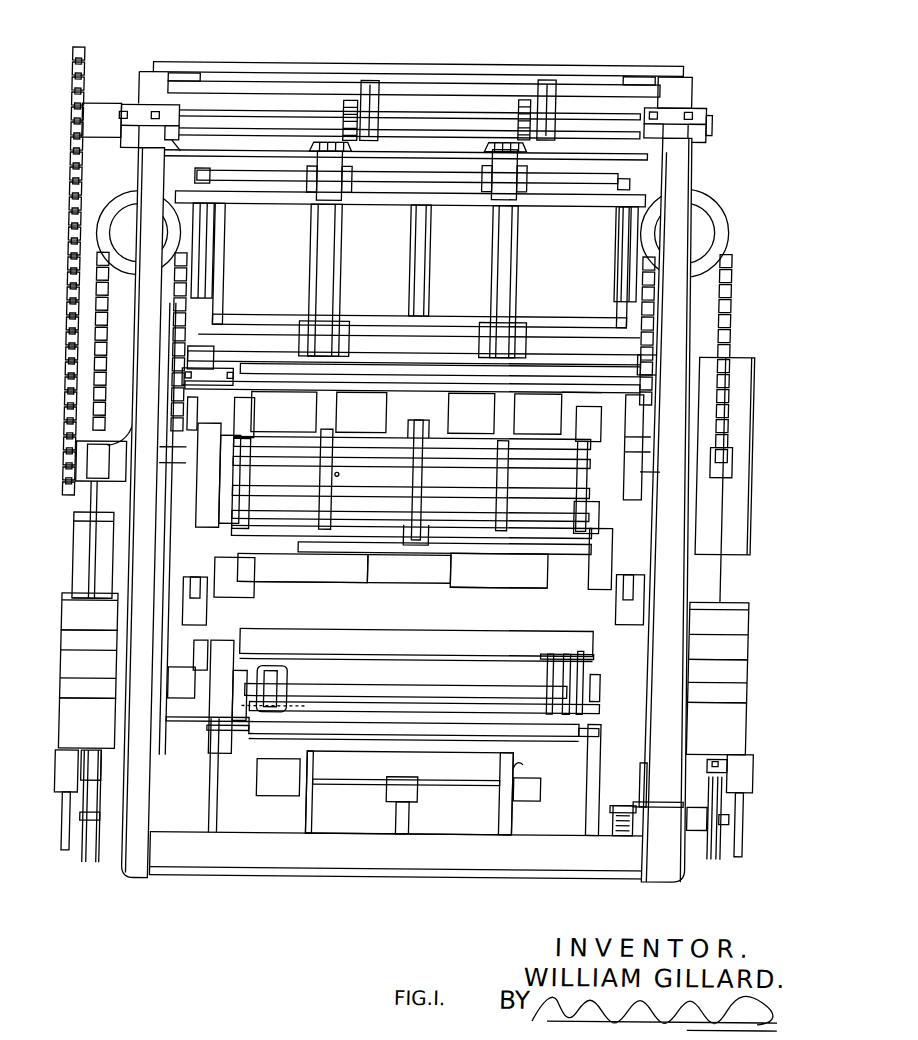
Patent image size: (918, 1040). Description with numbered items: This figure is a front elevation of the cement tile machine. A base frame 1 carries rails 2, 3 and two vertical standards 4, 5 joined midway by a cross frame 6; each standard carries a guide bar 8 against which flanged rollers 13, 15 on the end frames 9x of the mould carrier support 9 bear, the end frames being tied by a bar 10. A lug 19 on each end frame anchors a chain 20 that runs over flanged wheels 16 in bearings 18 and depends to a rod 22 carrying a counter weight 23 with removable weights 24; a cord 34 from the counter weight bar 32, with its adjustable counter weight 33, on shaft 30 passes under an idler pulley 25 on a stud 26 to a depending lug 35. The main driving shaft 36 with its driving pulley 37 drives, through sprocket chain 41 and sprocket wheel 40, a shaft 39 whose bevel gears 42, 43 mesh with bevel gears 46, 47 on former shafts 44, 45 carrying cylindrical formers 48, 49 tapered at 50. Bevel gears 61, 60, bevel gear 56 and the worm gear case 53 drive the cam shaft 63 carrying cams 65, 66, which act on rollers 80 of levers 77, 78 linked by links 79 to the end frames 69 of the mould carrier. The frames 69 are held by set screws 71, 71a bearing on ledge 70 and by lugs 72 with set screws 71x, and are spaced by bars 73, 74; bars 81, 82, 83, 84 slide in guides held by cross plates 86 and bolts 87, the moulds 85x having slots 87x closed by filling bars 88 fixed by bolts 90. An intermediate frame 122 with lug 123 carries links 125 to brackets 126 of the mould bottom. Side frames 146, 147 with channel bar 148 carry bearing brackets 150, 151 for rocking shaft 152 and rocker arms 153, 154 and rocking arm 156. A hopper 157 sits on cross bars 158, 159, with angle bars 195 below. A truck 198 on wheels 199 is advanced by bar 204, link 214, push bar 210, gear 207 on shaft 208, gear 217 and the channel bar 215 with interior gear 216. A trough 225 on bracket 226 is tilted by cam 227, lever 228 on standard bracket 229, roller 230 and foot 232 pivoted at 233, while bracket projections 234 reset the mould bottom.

The base frame 1 is at (179, 867).
The rail 2 is at (309, 836).
The rail 3 is at (509, 832).
The vertical standard 4 is at (140, 878).
The vertical standard 5 is at (678, 880).
The cross frame 6 is at (224, 307).
The guide bar 8 is at (163, 724).
The mould carrier support 9 is at (638, 400).
The end frame of mould carrier support 9x is at (179, 449).
The bar 10 is at (440, 375).
The flanged roller 13 is at (183, 380).
The flanged roller 15 is at (181, 532).
The flanged wheel 16 is at (116, 208).
The bearing 18 is at (128, 253).
The lug 19 is at (162, 345).
The chain 20 is at (178, 312).
The rod 22 is at (94, 520).
The counter weight 23 is at (121, 730).
The removable weight 24 is at (120, 693).
The idler pulley 25 is at (99, 858).
The stud 26 is at (98, 813).
The shaft 30 is at (405, 697).
The counter weight bar 32 is at (75, 853).
The counter weight 33 is at (95, 770).
The cord 34 is at (753, 823).
The depending lug 35 is at (730, 770).
The main driving shaft 36 is at (799, 439).
The driving pulley 37 is at (752, 550).
The shaft 39 is at (705, 122).
The sprocket wheel 40 is at (70, 55).
The sprocket chain 41 is at (77, 181).
The bevel gear 42 is at (513, 99).
The bevel gear 43 is at (341, 101).
The vertical former shaft 44 is at (505, 264).
The vertical former shaft 45 is at (320, 278).
The bevel gear 46 is at (499, 139).
The bevel gear 47 is at (314, 143).
The cylindrical former 48 is at (503, 586).
The cylindrical former 49 is at (325, 588).
The taper 50 is at (534, 444).
The worm gear case 53 is at (84, 575).
The bevel gear 56 is at (124, 623).
The bevel gear 60 is at (110, 483).
The bevel gear 61 is at (120, 481).
The cam shaft 63 is at (415, 573).
The cam 65 is at (258, 619).
The cam 66 is at (599, 438).
The end frame of mould carrier 69 is at (215, 404).
The ledge 70 is at (216, 419).
The set screw 71 is at (648, 365).
The set screw 71a is at (585, 396).
The set screw 71x is at (633, 450).
The lug 72 is at (629, 435).
The bar 73 is at (482, 434).
The bar 74 is at (499, 570).
The lever 77 is at (630, 615).
The lever 78 is at (178, 619).
The link 79 is at (190, 465).
The roller 80 is at (199, 650).
The bar 81 is at (394, 427).
The bar 82 is at (411, 482).
The bar 83 is at (404, 493).
The bar 84 is at (438, 523).
The mould 85x is at (348, 391).
The cross plate 86 is at (239, 435).
The bolt 87 is at (647, 471).
The vertical slotted opening 87x is at (334, 426).
The filling bar 88 is at (502, 409).
The bolt 90 is at (296, 479).
The intermediate frame 122 is at (354, 476).
The lug projection 123 is at (409, 440).
The link 125 is at (430, 450).
The bracket 126 is at (579, 546).
The side frame 146 is at (230, 820).
The side frame 147 is at (598, 819).
The cross channel bar 148 is at (361, 716).
The bearing bracket 150 is at (232, 694).
The bearing bracket 151 is at (607, 740).
The rocking shaft 152 is at (455, 690).
The rocker arm 153 is at (222, 665).
The rocker arm 154 is at (565, 679).
The rocking arm 156 is at (578, 677).
The hopper 157 is at (576, 84).
The cross bar 158 is at (656, 66).
The cross bar 159 is at (625, 155).
The angle bar 195 is at (364, 325).
The truck 198 is at (461, 730).
The wheel 199 is at (320, 811).
The bar 204 is at (655, 765).
The gear 207 is at (620, 838).
The shaft 208 is at (609, 848).
The push bar 210 is at (658, 801).
The link 214 is at (547, 779).
The channel bar 215 is at (396, 802).
The interior gear 216 is at (406, 805).
The gear 217 is at (426, 833).
The trough 225 is at (417, 638).
The bracket 226 is at (305, 681).
The cam 227 is at (302, 568).
The lever 228 is at (443, 587).
The standard bracket 229 is at (405, 700).
The roller 230 is at (265, 601).
The foot 232 is at (253, 715).
The pivot 233 is at (236, 719).
The bracket projection 234 is at (187, 550).